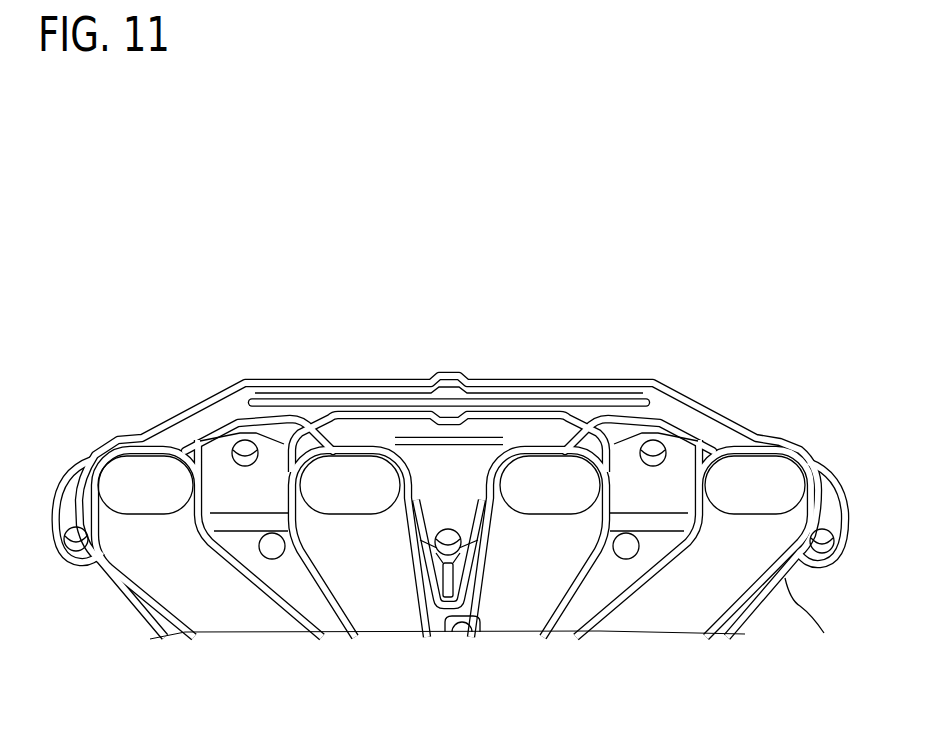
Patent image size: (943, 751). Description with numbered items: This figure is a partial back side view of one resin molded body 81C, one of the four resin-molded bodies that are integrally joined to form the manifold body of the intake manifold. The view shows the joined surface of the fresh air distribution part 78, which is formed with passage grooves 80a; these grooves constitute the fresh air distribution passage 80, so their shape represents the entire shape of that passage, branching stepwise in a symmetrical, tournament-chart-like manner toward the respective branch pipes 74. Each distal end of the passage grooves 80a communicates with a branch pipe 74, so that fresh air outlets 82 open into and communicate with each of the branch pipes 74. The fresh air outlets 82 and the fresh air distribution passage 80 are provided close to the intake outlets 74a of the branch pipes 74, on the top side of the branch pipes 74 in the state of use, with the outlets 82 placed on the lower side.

The branch pipes 74 is at (322, 627).
The intake outlets 74a is at (123, 477).
The fresh air distribution part 78 is at (583, 378).
The fresh air distribution passage 80 is at (275, 380).
The passage grooves 80a is at (263, 397).
The resin molded body 81C is at (836, 437).
The fresh air outlets 82 is at (760, 440).